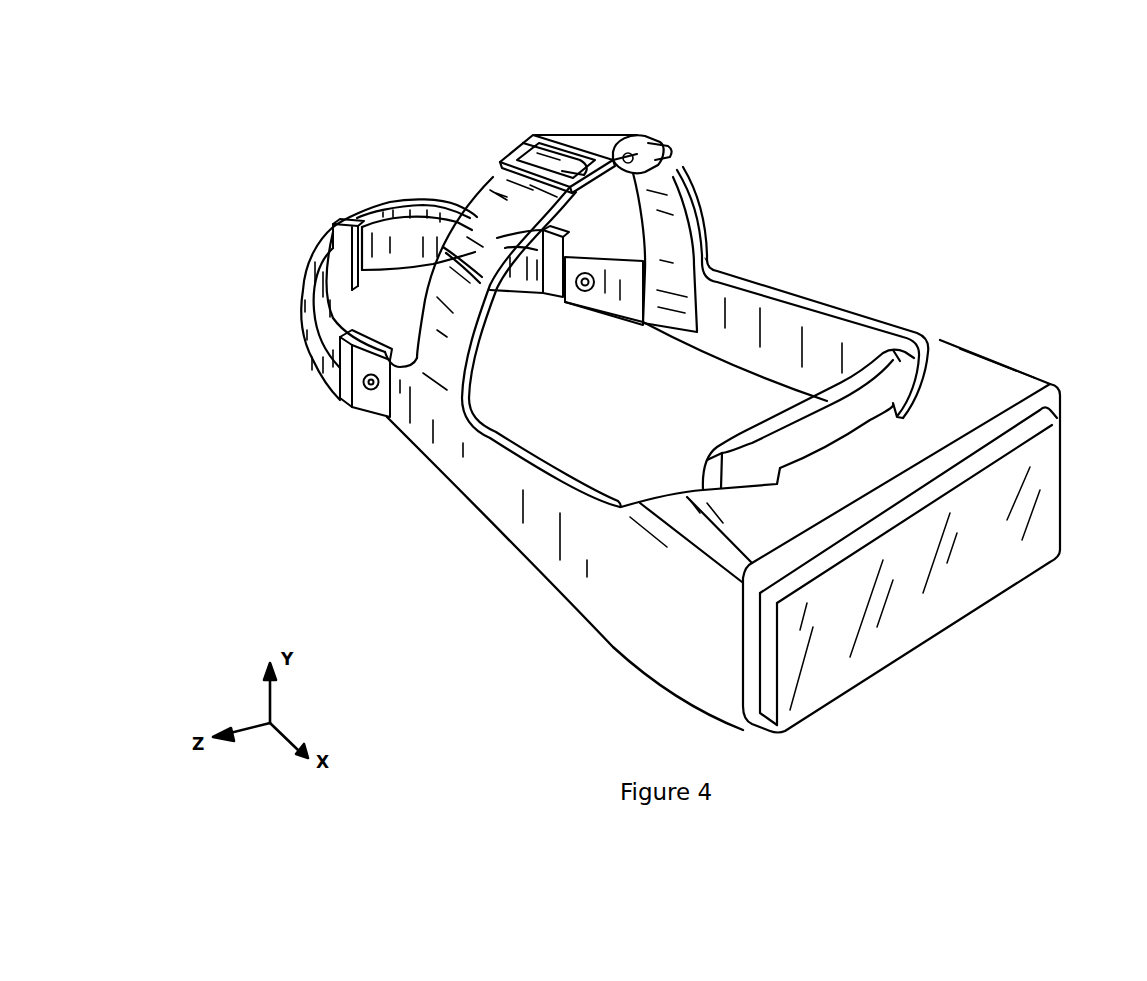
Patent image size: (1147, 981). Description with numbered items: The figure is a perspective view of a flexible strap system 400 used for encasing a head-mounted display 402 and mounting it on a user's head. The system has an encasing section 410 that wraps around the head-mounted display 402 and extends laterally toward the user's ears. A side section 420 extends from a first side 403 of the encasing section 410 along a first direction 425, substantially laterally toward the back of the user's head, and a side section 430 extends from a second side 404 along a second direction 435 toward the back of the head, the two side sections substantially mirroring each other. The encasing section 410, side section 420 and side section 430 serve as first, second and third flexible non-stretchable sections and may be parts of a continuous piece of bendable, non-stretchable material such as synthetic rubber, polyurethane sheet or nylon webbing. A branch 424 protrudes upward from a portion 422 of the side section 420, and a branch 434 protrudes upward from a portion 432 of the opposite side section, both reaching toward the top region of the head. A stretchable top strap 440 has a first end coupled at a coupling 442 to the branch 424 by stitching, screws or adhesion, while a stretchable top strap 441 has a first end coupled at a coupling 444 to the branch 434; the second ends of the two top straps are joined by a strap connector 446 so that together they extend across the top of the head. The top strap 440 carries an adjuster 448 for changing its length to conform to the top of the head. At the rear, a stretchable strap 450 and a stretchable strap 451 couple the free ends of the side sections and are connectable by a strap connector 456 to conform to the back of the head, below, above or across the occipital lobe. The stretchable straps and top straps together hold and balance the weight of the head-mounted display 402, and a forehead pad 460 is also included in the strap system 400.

The flexible strap system 400 is at (266, 100).
The head-mounted display 402 is at (1062, 477).
The first side 403 is at (677, 625).
The second side 404 is at (990, 347).
The encasing section 410 is at (1020, 357).
The side section 420 is at (513, 540).
The portion 422 is at (477, 408).
The branch 424 is at (462, 348).
The first direction 425 is at (487, 573).
The side section 430 is at (788, 292).
The portion 432 is at (715, 264).
The branch 434 is at (704, 212).
The second direction 435 is at (870, 310).
The stretchable top strap 440 is at (493, 177).
The stretchable top strap 441 is at (665, 150).
The coupling 442 is at (490, 333).
The coupling 444 is at (717, 192).
The strap connector 446 is at (637, 137).
The adjuster 448 is at (553, 131).
The stretchable strap 450 is at (430, 197).
The stretchable strap 451 is at (303, 273).
The strap connector 456 is at (358, 215).
The forehead pad 460 is at (903, 349).